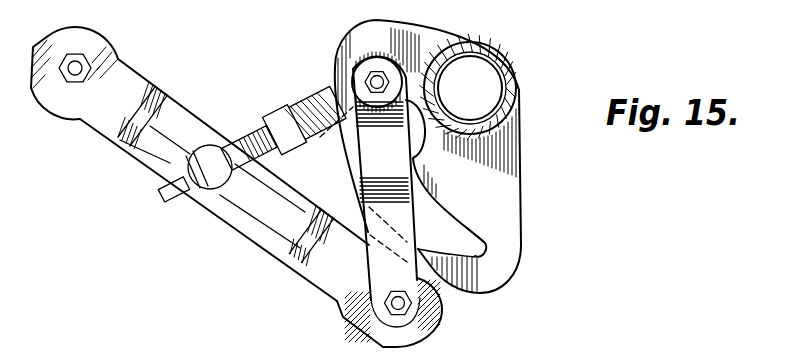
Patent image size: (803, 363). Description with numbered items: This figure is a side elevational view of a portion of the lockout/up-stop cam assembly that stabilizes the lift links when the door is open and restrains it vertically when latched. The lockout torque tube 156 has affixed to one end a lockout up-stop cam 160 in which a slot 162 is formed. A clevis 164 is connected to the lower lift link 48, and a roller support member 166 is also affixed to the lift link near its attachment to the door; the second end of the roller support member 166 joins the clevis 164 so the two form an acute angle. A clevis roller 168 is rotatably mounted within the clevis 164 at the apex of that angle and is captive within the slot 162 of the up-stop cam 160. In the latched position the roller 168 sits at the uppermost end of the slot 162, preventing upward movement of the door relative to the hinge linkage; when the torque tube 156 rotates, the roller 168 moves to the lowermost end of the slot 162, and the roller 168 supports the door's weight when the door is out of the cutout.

The lower lift link 48 is at (247, 222).
The lockout torque tube 156 is at (488, 83).
The lockout up-stop cam 160 is at (508, 172).
The slot 162 is at (478, 254).
The clevis 164 is at (310, 93).
The roller support member 166 is at (433, 298).
The clevis roller 168 is at (381, 55).